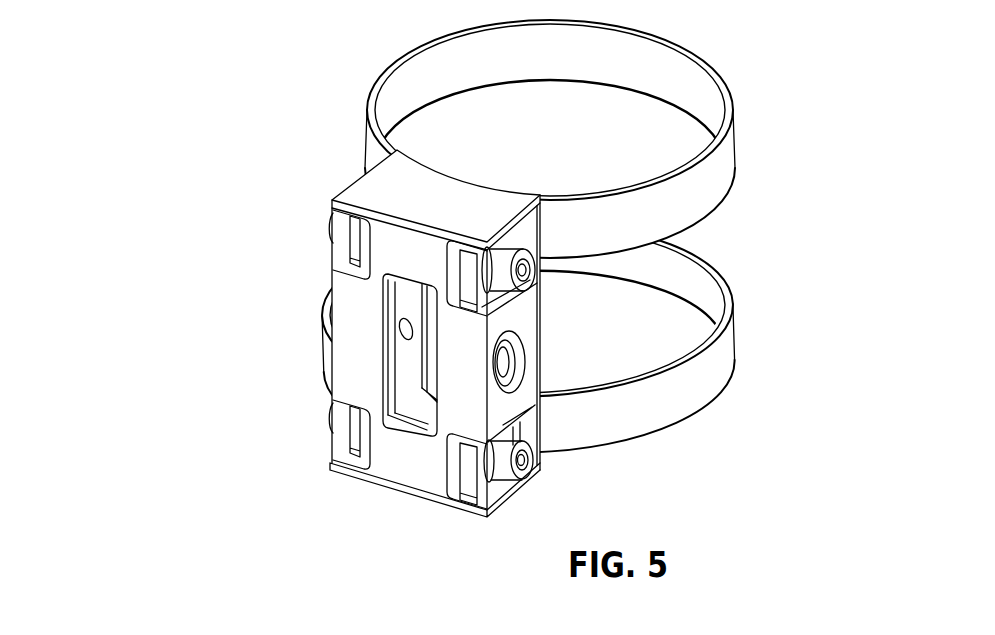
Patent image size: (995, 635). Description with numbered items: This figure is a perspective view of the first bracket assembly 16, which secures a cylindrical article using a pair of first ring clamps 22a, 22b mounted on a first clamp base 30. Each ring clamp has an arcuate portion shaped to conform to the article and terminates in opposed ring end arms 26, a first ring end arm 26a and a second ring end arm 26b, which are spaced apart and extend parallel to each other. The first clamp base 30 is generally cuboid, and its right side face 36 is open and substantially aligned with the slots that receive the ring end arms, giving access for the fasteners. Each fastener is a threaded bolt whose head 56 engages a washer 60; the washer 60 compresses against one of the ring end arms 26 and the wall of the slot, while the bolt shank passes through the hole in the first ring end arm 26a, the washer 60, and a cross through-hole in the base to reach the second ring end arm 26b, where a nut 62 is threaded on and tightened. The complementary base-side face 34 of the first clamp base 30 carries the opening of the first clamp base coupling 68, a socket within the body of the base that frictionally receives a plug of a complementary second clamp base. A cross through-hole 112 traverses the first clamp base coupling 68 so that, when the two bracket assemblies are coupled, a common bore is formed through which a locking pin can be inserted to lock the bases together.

The first bracket assembly 16 is at (434, 349).
The first ring clamp 22a is at (737, 150).
The first ring clamp 22b is at (725, 352).
The ring end arms 26 is at (431, 359).
The first ring end arm 26a is at (470, 306).
The second ring end arm 26b is at (287, 339).
The first clamp base 30 is at (350, 183).
The complementary base-side face 34 is at (410, 470).
The right side face 36 is at (513, 403).
The head 56 is at (546, 364).
The washer 60 is at (490, 285).
The nut 62 is at (335, 262).
The first clamp base coupling 68 is at (407, 366).
The cross through-hole 112 is at (505, 372).